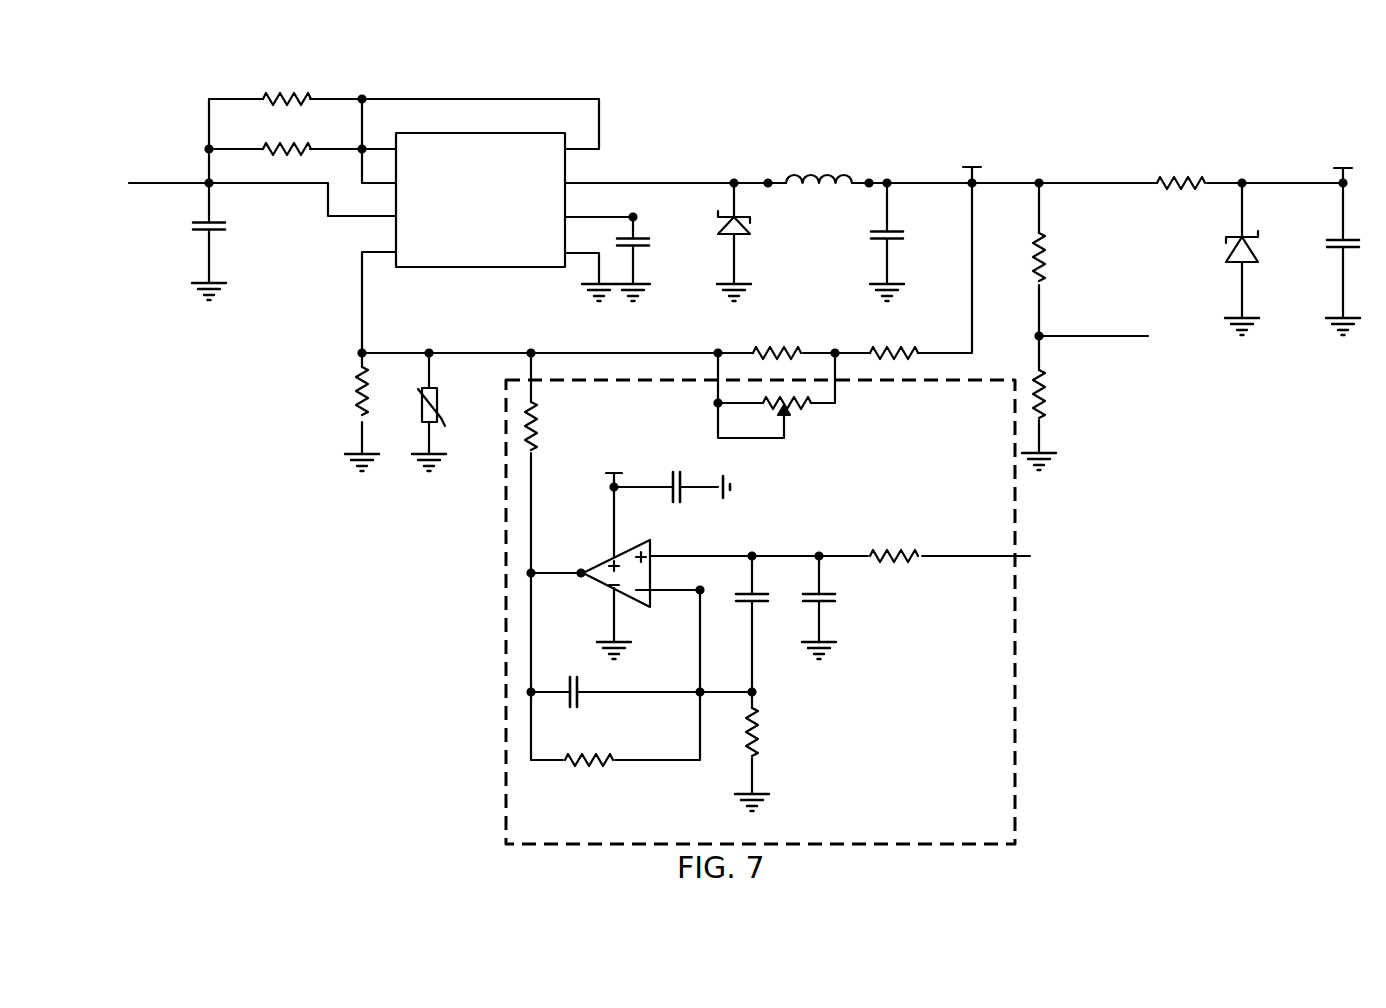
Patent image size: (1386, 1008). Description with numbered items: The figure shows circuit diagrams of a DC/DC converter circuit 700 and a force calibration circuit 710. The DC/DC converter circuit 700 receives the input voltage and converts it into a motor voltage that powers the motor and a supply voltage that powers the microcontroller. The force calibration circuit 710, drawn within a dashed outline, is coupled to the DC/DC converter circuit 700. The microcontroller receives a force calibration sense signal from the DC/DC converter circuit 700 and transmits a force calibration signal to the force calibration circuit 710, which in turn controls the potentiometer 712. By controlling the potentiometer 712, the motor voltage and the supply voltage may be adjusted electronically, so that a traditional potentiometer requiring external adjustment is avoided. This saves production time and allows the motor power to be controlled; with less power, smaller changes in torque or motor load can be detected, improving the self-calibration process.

The DC/DC converter circuit 700 is at (797, 74).
The force calibration circuit 710 is at (531, 832).
The potentiometer 712 is at (812, 427).